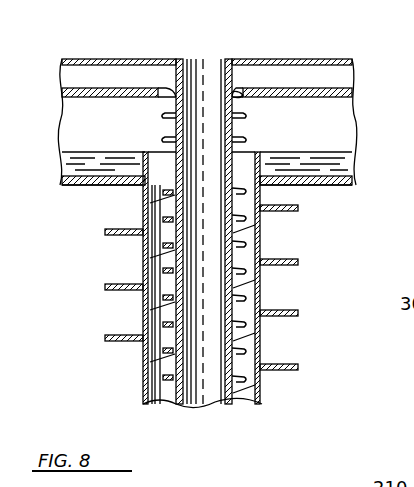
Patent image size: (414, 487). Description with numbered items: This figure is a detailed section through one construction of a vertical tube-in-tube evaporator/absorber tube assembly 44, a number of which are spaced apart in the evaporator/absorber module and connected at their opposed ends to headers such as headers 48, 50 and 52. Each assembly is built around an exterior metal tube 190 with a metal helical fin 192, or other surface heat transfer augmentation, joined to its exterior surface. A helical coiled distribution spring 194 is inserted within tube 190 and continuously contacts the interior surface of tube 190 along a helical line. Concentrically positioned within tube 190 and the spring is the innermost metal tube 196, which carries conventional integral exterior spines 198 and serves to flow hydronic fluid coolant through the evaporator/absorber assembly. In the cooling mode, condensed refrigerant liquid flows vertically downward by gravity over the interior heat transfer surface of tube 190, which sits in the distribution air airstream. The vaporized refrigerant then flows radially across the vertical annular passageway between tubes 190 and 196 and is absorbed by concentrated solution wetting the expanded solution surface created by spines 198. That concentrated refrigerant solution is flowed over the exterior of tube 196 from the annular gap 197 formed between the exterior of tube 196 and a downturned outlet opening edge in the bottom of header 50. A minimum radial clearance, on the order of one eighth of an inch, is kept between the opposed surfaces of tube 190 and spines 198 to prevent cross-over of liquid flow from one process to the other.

The tube assembly 44 is at (116, 260).
The header 48 is at (338, 186).
The header 50 is at (338, 95).
The header 52 is at (320, 58).
The exterior metal tube 190 is at (258, 245).
The helical fin 192 is at (105, 287).
The helical coiled distribution spring 194 is at (253, 297).
The innermost metal tube 196 is at (197, 76).
The annular gap 197 is at (238, 95).
The exterior spines 198 is at (165, 136).